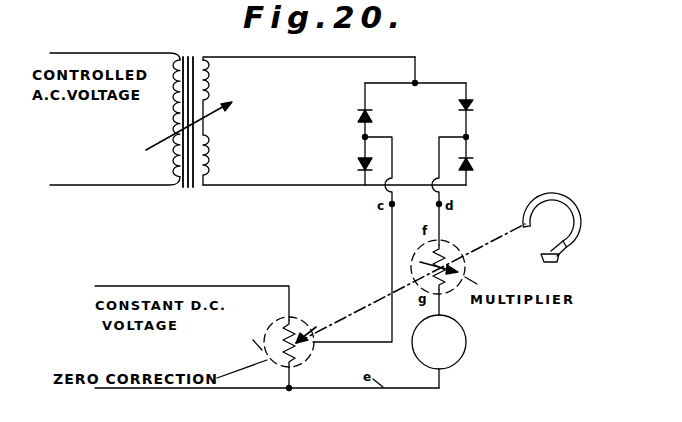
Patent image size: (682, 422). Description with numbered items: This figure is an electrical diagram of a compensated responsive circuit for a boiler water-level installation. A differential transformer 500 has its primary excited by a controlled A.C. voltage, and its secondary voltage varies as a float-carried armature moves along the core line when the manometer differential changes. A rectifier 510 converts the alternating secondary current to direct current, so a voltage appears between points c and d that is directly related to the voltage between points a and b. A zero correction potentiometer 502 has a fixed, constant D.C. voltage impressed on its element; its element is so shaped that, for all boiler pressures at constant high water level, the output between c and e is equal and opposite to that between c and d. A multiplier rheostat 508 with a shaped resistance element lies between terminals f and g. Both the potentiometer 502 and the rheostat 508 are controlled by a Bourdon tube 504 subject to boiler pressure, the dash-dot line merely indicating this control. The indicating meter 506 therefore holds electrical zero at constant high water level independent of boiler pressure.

The differential transformer 500 is at (213, 53).
The zero correction potentiometer 502 is at (295, 318).
The Bourdon tube 504 is at (571, 204).
The indicating meter 506 is at (466, 346).
The multiplier rheostat 508 is at (450, 245).
The rectifier 510 is at (478, 100).